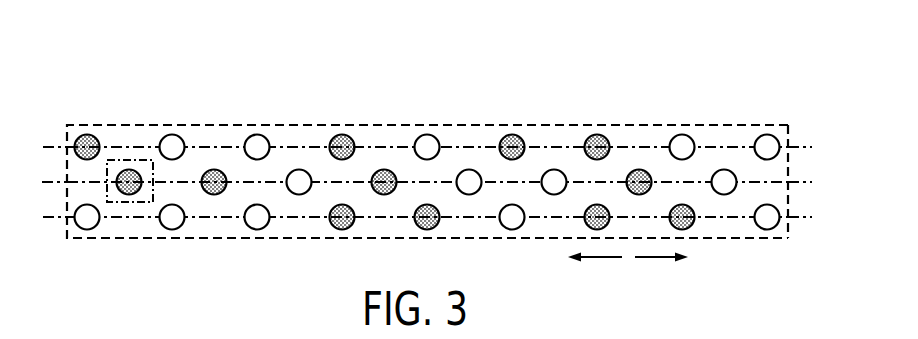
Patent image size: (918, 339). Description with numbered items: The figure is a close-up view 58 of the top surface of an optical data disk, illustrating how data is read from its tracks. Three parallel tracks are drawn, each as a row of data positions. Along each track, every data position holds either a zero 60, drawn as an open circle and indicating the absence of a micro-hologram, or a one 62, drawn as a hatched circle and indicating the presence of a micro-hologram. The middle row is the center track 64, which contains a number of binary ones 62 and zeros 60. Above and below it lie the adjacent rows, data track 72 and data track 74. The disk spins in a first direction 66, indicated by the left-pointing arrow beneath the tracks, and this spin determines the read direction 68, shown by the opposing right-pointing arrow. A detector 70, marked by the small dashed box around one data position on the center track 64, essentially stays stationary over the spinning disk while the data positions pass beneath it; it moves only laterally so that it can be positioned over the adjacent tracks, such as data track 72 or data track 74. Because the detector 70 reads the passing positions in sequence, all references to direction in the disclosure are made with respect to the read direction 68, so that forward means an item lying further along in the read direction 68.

The close-up view 58 is at (123, 78).
The zero 60 is at (428, 147).
The one 62 is at (513, 146).
The center track 64 is at (58, 177).
The first direction 66 is at (608, 258).
The read direction 68 is at (655, 258).
The detector 70 is at (138, 205).
The data track 72 is at (806, 220).
The data track 74 is at (798, 145).